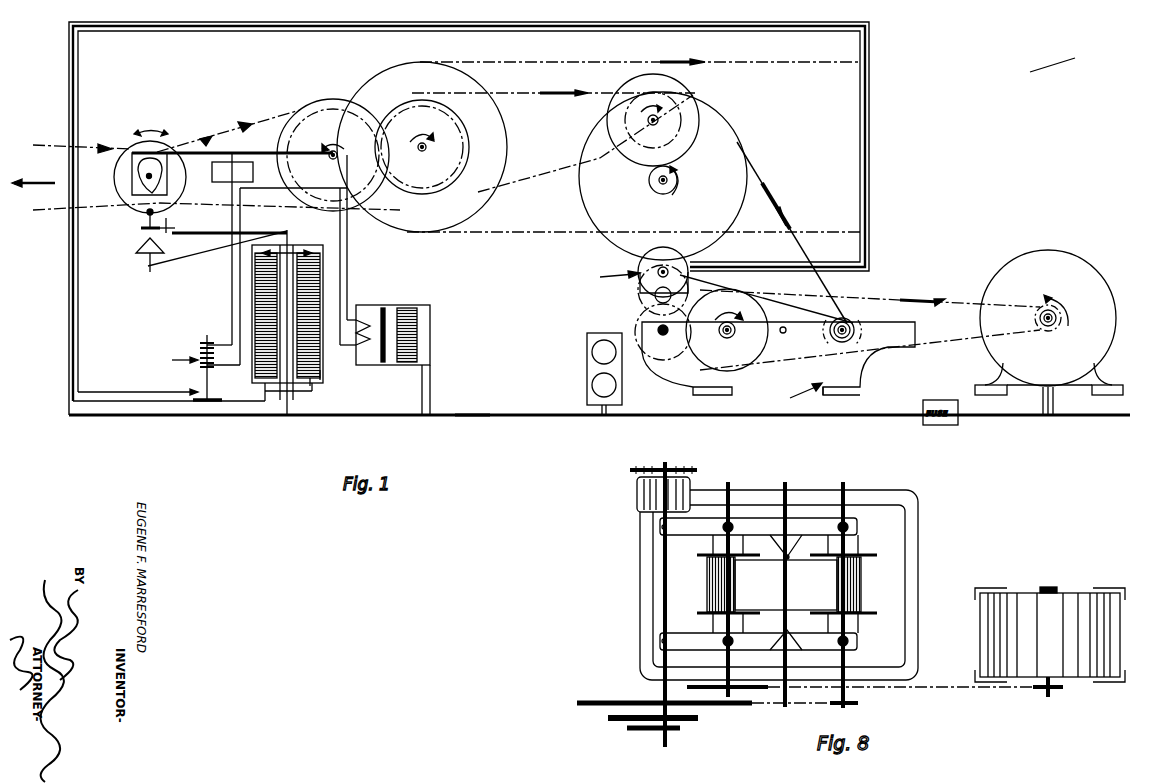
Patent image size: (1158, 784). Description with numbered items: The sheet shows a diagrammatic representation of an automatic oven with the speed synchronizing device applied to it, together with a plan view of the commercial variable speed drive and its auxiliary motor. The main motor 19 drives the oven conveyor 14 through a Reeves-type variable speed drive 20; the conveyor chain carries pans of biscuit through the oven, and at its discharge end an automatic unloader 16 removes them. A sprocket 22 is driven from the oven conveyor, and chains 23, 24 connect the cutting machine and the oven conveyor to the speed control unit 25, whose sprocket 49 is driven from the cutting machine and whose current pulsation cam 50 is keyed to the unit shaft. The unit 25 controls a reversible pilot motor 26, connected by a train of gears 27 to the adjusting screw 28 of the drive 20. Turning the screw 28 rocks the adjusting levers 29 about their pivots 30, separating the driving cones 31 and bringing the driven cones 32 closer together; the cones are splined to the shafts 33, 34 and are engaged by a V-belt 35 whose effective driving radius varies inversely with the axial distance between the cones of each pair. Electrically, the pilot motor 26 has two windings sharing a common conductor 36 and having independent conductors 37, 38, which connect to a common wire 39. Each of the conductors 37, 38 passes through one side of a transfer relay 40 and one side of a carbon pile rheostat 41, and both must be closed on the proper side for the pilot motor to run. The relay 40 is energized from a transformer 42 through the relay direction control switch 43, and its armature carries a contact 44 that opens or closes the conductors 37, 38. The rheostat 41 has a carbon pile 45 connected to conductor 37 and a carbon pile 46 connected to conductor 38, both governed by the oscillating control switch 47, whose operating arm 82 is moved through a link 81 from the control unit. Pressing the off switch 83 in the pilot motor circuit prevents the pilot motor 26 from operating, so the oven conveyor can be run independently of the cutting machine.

In FIG. 1, the oven conveyor 14 is at (518, 230).
In FIG. 1, the automatic unloader 16 is at (432, 229).
In FIG. 1, the motor 19 is at (1117, 303).
In FIG. 8, the motor 19 is at (1018, 596).
In FIG. 1, the variable speed drive 20 is at (866, 373).
In FIG. 8, the variable speed drive 20 is at (918, 533).
In FIG. 1, the sprocket 22 is at (331, 104).
In FIG. 1, the chain 23 is at (48, 146).
In FIG. 1, the chain 24 is at (240, 126).
In FIG. 1, the speed control unit 25 is at (214, 162).
In FIG. 1, the pilot motor 26 is at (646, 284).
In FIG. 8, the pilot motor 26 is at (637, 492).
In FIG. 1, the train of gears 27 is at (654, 300).
In FIG. 8, the train of gears 27 is at (632, 470).
In FIG. 1, the adjusting screw 28 is at (663, 336).
In FIG. 8, the adjusting screw 28 is at (663, 578).
In FIG. 8, the adjusting levers 29 is at (698, 535).
In FIG. 8, the pivots 30 is at (785, 532).
In FIG. 8, the driving cones 31 is at (708, 602).
In FIG. 8, the driven cones 32 is at (866, 562).
In FIG. 8, the shaft 33 is at (732, 514).
In FIG. 8, the driven shaft 34 is at (850, 514).
In FIG. 8, the V-belt 35 is at (786, 585).
In FIG. 1, the common conductor 36 is at (869, 133).
In FIG. 1, the conductor 37 is at (866, 122).
In FIG. 1, the conductor 38 is at (863, 129).
In FIG. 1, the common wire 39 is at (470, 414).
In FIG. 1, the transfer relay 40 is at (200, 342).
In FIG. 1, the carbon pile rheostat 41 is at (322, 372).
In FIG. 1, the transformer 42 is at (392, 306).
In FIG. 1, the relay direction control switch 43 is at (240, 160).
In FIG. 1, the contact 44 is at (214, 397).
In FIG. 1, the carbon pile 45 is at (255, 299).
In FIG. 1, the carbon pile 46 is at (312, 386).
In FIG. 1, the control switch 47 is at (290, 254).
In FIG. 1, the sprocket 49 is at (147, 176).
In FIG. 1, the current pulsation cam 50 is at (138, 185).
In FIG. 1, the link 81 is at (192, 250).
In FIG. 1, the operating arm 82 is at (305, 221).
In FIG. 1, the off switch 83 is at (587, 338).